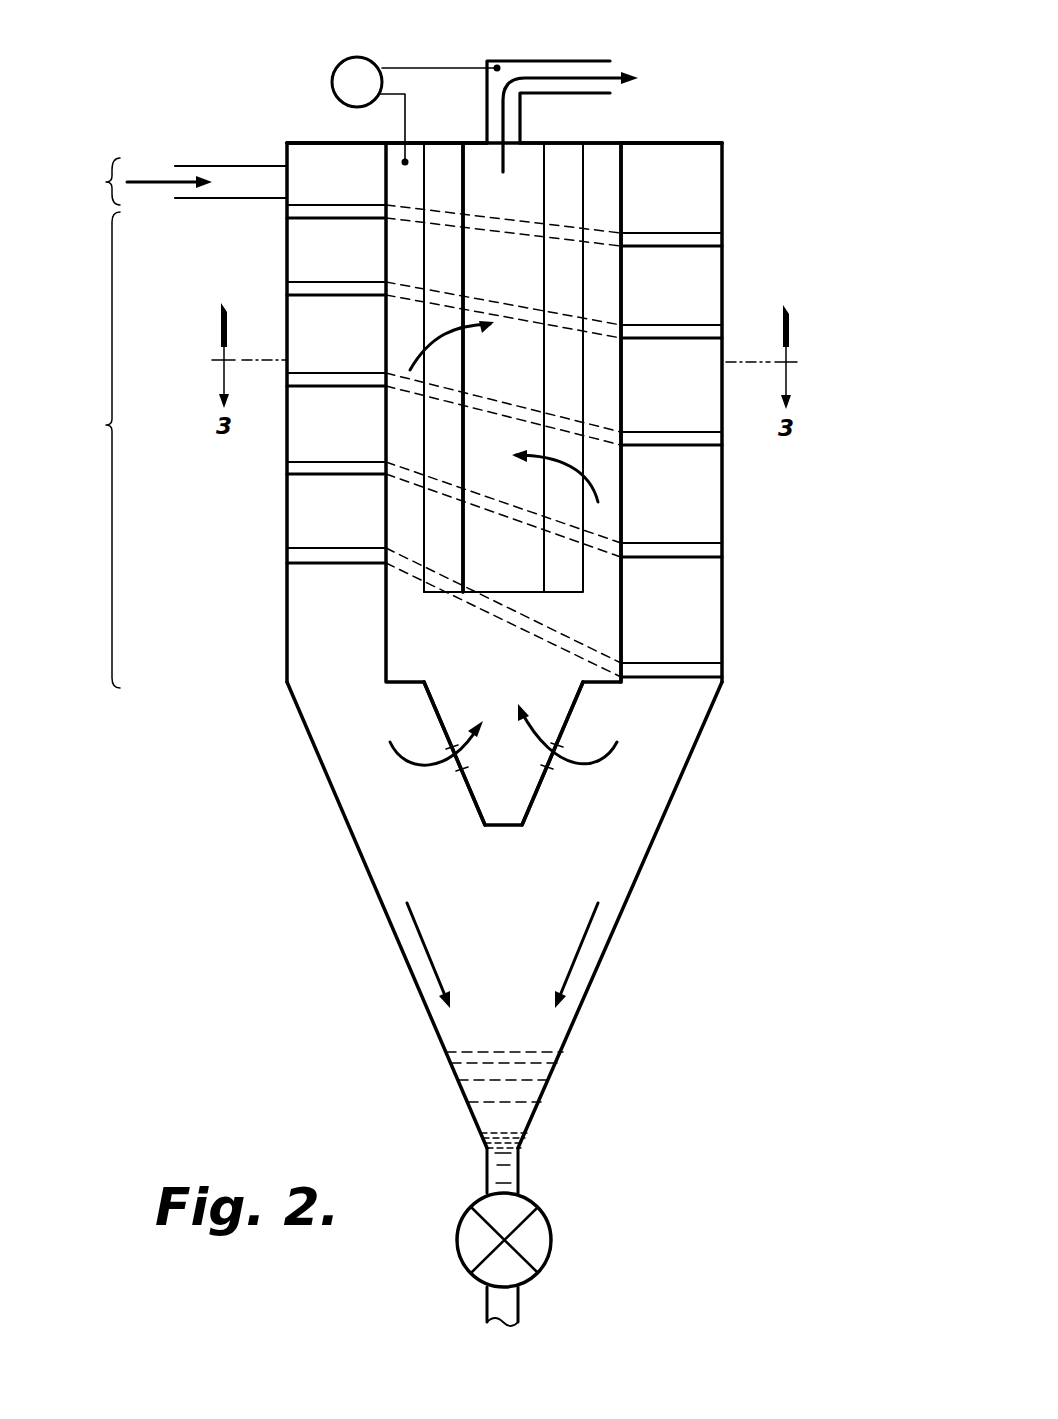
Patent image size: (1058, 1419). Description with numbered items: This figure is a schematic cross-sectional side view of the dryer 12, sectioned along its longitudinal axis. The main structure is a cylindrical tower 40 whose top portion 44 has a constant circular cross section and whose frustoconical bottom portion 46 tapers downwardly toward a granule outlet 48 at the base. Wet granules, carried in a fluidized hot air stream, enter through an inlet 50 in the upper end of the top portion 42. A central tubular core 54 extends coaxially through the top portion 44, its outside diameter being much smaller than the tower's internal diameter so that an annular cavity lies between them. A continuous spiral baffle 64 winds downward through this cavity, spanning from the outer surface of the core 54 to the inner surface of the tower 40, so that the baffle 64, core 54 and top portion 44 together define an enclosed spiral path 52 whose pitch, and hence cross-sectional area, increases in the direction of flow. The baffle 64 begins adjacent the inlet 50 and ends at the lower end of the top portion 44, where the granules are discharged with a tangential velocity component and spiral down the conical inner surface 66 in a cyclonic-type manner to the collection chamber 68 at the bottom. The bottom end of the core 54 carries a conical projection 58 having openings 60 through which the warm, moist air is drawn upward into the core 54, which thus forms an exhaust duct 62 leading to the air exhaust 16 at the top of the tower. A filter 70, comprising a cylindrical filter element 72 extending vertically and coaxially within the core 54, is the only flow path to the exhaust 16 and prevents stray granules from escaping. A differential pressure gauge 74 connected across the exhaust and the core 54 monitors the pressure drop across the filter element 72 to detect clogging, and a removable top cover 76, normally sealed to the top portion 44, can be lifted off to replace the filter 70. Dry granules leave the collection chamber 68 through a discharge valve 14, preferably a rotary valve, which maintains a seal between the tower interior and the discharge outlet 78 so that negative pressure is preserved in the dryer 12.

The dryer 12 is at (852, 215).
The discharge valve 14 is at (552, 1245).
The air exhaust 16 is at (557, 61).
The cylindrical tower 40 is at (723, 475).
The top portion 42 is at (106, 182).
The top portion 44 is at (106, 425).
The frustoconical bottom portion 46 is at (353, 842).
The granule outlet 48 is at (520, 1178).
The inlet 50 is at (218, 166).
The spiral path 52 is at (698, 285).
The central tubular core 54 is at (621, 172).
The conical projection 58 is at (427, 702).
The openings 60 is at (553, 767).
The exhaust duct 62 is at (613, 203).
The spiral baffle 64 is at (683, 542).
The conical inner surface 66 is at (703, 723).
The collection chamber 68 is at (463, 1092).
The filter 70 is at (423, 433).
The cylindrical filter element 72 is at (442, 528).
The differential pressure gauge 74 is at (332, 82).
The removable top cover 76 is at (302, 143).
The discharge outlet 78 is at (518, 1298).